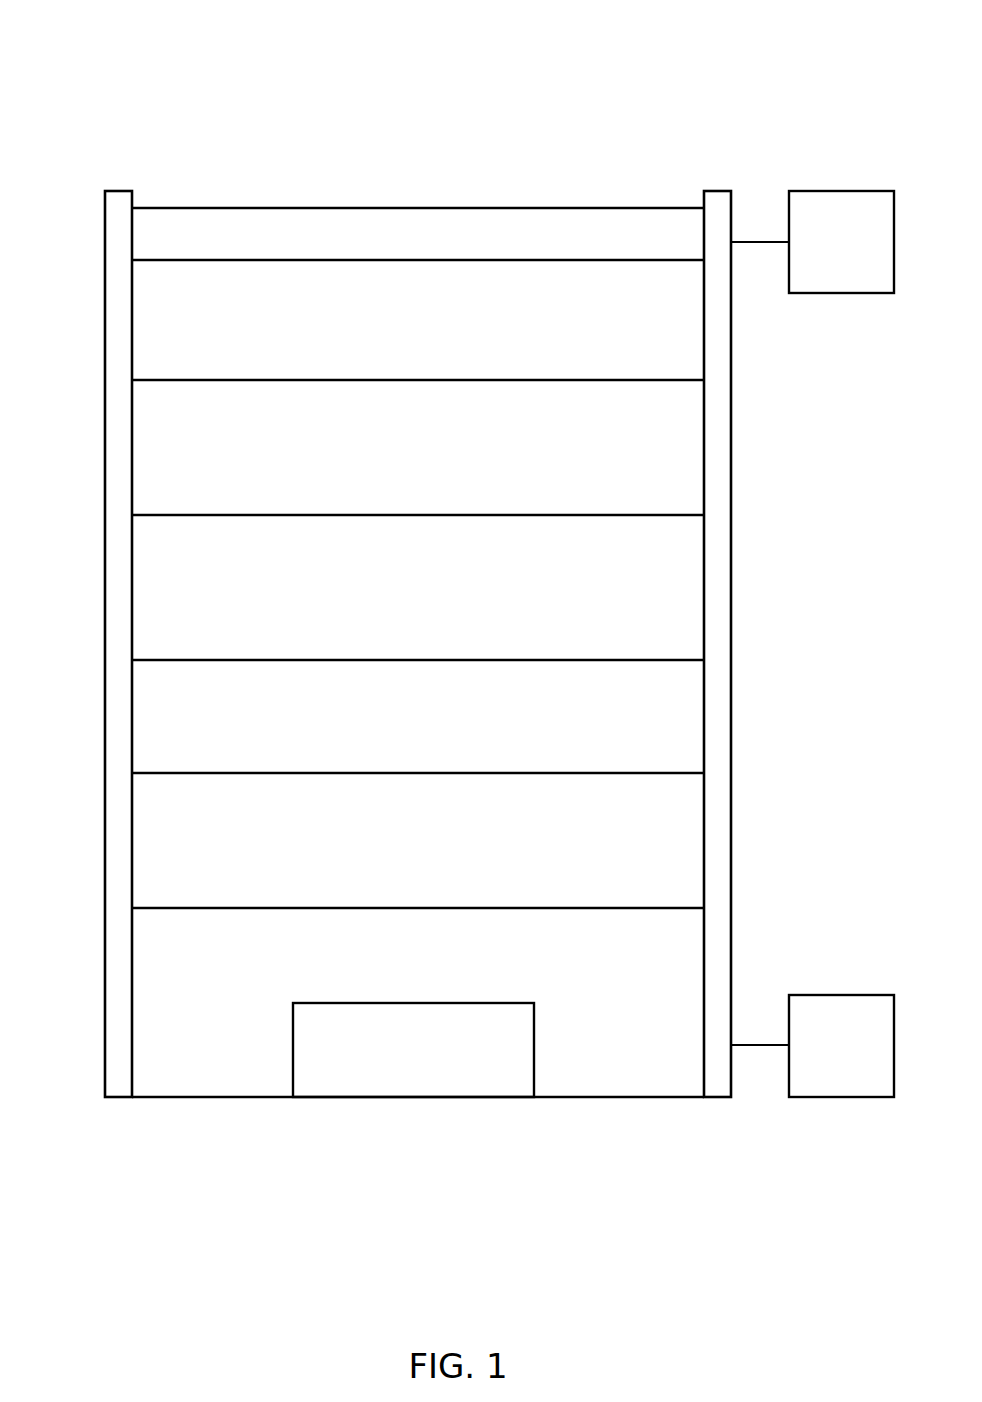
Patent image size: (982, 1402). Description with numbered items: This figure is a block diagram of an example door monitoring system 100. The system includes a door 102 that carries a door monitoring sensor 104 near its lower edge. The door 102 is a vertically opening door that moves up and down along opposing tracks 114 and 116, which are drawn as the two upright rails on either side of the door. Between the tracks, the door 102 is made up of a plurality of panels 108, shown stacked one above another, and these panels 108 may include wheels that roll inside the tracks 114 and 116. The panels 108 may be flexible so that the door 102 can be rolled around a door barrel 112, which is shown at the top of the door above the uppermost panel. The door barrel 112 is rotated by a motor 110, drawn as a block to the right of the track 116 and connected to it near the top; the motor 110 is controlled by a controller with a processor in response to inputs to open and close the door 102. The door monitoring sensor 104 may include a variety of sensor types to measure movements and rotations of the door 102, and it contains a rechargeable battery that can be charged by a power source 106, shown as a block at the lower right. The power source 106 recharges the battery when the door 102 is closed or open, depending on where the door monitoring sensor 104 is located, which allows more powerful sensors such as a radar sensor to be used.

The door monitoring system 100 is at (135, 19).
The door 102 is at (427, 644).
The door monitoring sensor 104 is at (413, 1050).
The power source 106 is at (812, 1046).
The panels 108 is at (418, 688).
The motor 110 is at (812, 242).
The door barrel 112 is at (418, 234).
The track 114 is at (105, 600).
The track 116 is at (731, 617).